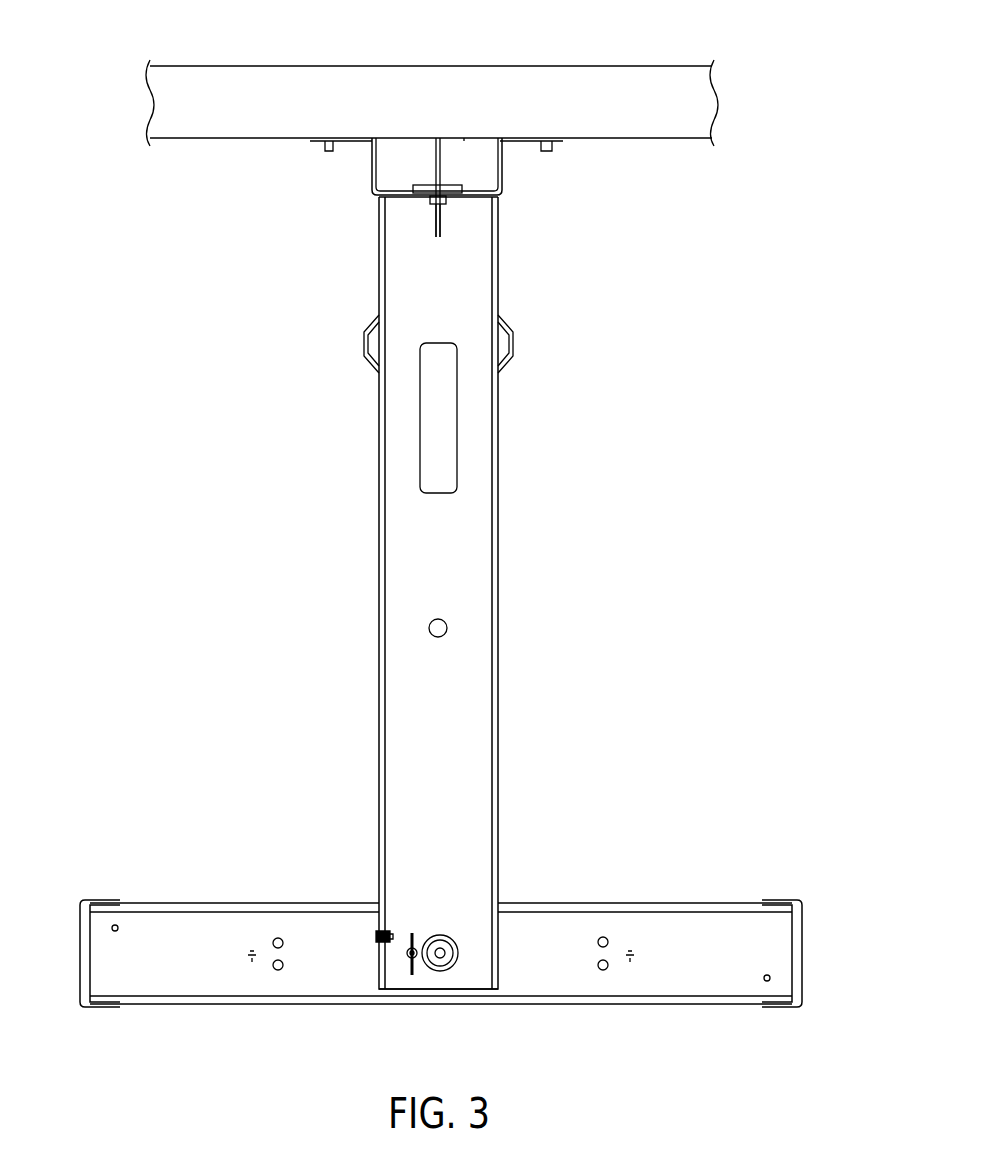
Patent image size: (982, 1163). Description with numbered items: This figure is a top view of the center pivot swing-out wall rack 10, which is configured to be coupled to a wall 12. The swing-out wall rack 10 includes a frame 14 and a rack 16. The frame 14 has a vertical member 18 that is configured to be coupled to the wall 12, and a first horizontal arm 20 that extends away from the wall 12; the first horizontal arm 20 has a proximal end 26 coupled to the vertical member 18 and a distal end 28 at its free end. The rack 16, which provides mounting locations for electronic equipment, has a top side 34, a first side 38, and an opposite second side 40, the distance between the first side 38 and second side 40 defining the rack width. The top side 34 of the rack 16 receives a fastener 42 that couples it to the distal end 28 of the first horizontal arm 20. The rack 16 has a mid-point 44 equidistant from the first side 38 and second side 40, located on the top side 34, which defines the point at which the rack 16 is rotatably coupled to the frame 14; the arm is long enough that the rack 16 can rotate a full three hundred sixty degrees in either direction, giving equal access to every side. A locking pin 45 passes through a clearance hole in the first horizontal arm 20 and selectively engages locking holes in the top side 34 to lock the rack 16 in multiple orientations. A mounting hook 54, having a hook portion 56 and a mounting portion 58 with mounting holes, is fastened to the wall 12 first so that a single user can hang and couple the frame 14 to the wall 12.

The swing-out wall rack 10 is at (187, 411).
The wall 12 is at (590, 88).
The frame 14 is at (588, 358).
The rack 16 is at (251, 1016).
The vertical member 18 is at (370, 167).
The first horizontal arm 20 is at (447, 555).
The proximal end 26 is at (443, 290).
The distal end 28 is at (465, 890).
The top side 34 is at (700, 925).
The first side 38 is at (80, 955).
The second side 40 is at (804, 952).
The fastener 42 is at (442, 958).
The mid-point 44 is at (432, 972).
The locking pin 45 is at (412, 932).
The mounting hook 54 is at (436, 118).
The hook portion 56 is at (437, 166).
The mounting portion 58 is at (465, 138).